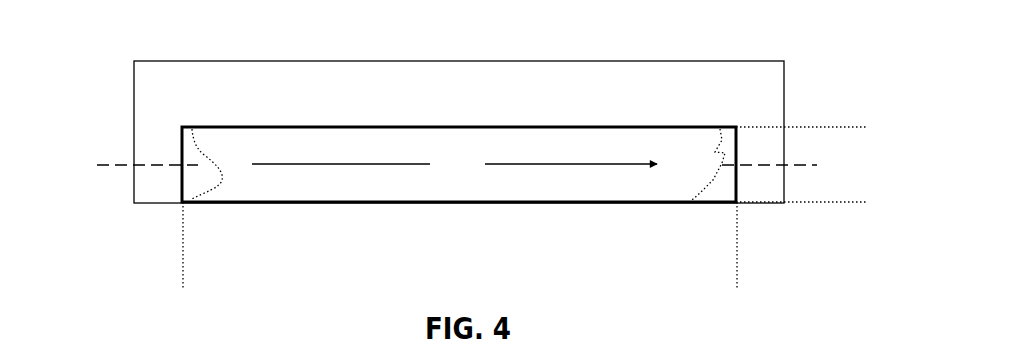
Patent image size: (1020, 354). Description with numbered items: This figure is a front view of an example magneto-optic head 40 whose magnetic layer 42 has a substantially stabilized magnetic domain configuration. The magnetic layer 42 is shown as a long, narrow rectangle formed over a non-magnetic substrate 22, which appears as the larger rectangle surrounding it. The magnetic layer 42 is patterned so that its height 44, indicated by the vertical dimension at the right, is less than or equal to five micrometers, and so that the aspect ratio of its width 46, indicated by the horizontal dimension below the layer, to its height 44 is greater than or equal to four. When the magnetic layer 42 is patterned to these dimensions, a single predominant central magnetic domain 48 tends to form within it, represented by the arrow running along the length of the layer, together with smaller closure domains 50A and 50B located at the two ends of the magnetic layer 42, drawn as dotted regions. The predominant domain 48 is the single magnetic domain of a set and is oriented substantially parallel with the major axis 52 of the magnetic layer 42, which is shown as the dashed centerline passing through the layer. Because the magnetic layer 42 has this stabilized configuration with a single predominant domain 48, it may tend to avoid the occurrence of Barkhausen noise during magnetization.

The non-magnetic substrate 22 is at (143, 113).
The magneto-optic head 40 is at (104, 47).
The magnetic layer 42 is at (337, 143).
The height 44 is at (861, 137).
The width 46 is at (193, 273).
The predominant central magnetic domain 48 is at (445, 174).
The closure domain 50A is at (197, 182).
The closure domain 50B is at (713, 188).
The major axis 52 is at (116, 165).